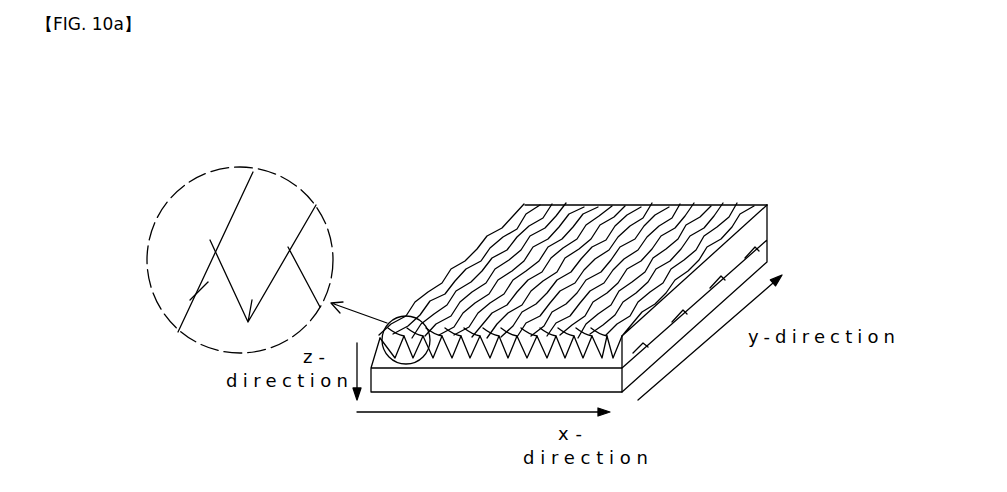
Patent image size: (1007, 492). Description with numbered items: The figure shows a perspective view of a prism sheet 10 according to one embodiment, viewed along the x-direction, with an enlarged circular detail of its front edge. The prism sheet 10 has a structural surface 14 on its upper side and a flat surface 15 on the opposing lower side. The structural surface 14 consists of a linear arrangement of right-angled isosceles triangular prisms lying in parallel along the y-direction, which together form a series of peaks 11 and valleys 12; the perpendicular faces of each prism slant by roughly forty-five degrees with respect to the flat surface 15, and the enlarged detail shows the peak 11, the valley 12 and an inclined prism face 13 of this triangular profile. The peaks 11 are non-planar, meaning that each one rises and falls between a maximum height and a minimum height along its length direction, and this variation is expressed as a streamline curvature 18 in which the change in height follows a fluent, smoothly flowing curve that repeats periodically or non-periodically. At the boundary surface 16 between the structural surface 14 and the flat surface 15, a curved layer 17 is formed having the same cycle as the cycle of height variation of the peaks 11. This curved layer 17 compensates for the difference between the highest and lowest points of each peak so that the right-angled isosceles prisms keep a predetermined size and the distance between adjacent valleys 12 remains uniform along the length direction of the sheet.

The prism sheet 10 is at (569, 300).
The peak 11 is at (218, 222).
The valley 12 is at (247, 328).
The inclined surface 13 is at (180, 303).
The structural surface 14 is at (607, 189).
The flat surface 15 is at (415, 382).
The boundary surface 16 is at (634, 355).
The curved layer 17 is at (670, 323).
The streamline curvature 18 is at (592, 330).